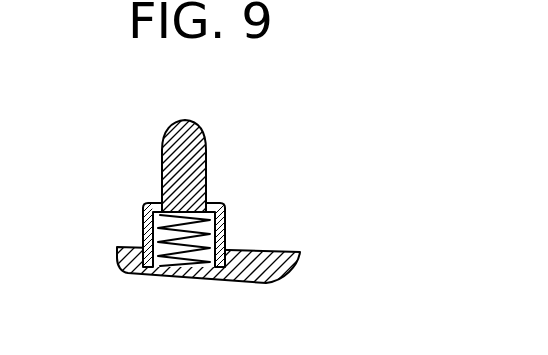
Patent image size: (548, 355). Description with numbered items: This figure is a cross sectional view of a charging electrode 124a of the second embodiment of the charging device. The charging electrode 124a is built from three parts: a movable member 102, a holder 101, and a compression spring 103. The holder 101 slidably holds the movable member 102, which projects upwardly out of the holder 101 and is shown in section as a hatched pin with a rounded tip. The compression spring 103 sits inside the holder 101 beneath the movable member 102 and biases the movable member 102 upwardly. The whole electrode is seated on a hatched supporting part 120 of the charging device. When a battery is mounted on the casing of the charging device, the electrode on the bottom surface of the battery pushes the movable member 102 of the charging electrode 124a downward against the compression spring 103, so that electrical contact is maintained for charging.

The charging electrode 124a is at (168, 141).
The movable member 102 is at (233, 147).
The holder 101 is at (225, 232).
The compression spring 103 is at (142, 238).
The base 120 is at (248, 283).